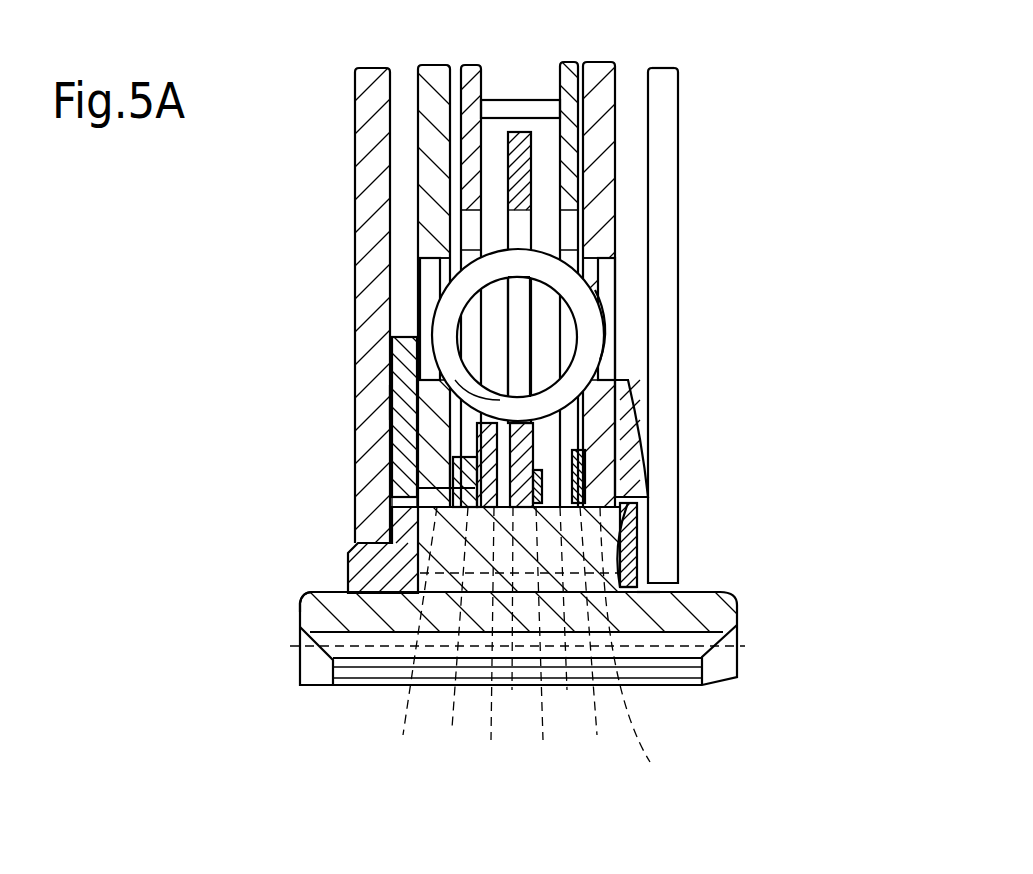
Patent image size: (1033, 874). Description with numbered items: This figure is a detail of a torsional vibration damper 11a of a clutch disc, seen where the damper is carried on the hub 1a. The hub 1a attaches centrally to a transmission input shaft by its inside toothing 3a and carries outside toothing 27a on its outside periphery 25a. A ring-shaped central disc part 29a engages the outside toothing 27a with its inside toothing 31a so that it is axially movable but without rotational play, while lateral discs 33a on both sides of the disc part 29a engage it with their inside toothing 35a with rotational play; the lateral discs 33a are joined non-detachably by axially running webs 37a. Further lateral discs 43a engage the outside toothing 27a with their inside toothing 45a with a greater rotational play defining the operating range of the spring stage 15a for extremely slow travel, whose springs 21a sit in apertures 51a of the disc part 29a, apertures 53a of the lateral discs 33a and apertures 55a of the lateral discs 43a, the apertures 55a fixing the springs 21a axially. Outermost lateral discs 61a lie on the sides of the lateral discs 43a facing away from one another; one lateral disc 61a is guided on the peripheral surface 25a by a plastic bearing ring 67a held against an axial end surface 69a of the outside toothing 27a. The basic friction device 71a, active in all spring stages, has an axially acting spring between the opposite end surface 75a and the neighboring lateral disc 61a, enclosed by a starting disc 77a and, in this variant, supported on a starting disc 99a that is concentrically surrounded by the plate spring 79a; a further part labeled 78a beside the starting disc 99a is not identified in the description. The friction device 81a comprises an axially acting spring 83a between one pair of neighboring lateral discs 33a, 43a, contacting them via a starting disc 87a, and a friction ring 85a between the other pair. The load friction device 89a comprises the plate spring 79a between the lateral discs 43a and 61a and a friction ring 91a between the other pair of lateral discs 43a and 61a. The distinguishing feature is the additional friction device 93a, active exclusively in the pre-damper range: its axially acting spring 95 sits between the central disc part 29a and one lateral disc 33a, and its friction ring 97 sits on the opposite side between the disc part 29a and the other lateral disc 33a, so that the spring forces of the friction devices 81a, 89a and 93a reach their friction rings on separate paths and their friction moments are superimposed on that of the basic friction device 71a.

The hub 1a is at (705, 603).
The inside toothing 3a is at (705, 652).
The torsional vibration damper 11a is at (725, 80).
The spring stage 15a is at (622, 320).
The springs 21a is at (420, 264).
The outside periphery 25a is at (323, 587).
The outside toothing 27a is at (453, 631).
The disc part 29a is at (530, 173).
The inside toothing 31a is at (558, 640).
The lateral discs 33a is at (470, 125).
The inside toothing 35a is at (556, 641).
The webs 37a is at (515, 105).
The lateral discs 43a is at (440, 72).
The inside toothing 45a is at (530, 652).
The apertures 51a is at (523, 362).
The apertures 53a is at (460, 297).
The apertures 55a is at (420, 258).
The lateral discs 61a is at (362, 95).
The plastic bearing ring 67a is at (360, 548).
The axial end surface 69a is at (435, 527).
The basic friction device 71a is at (698, 567).
The end surface 75a is at (622, 592).
The starting disc 77a is at (632, 592).
The curved lip 78a is at (628, 540).
The plate spring 79a is at (600, 458).
The friction device 81a is at (447, 465).
The axially acting spring 83a is at (623, 407).
The friction ring 85a is at (392, 437).
The starting disc 87a is at (648, 490).
The friction device 89a is at (388, 402).
The friction ring 91a is at (400, 357).
The additional friction device 93a is at (487, 488).
The axially acting spring 95 is at (567, 690).
The friction ring 97 is at (512, 690).
The starting disc 99a is at (640, 565).